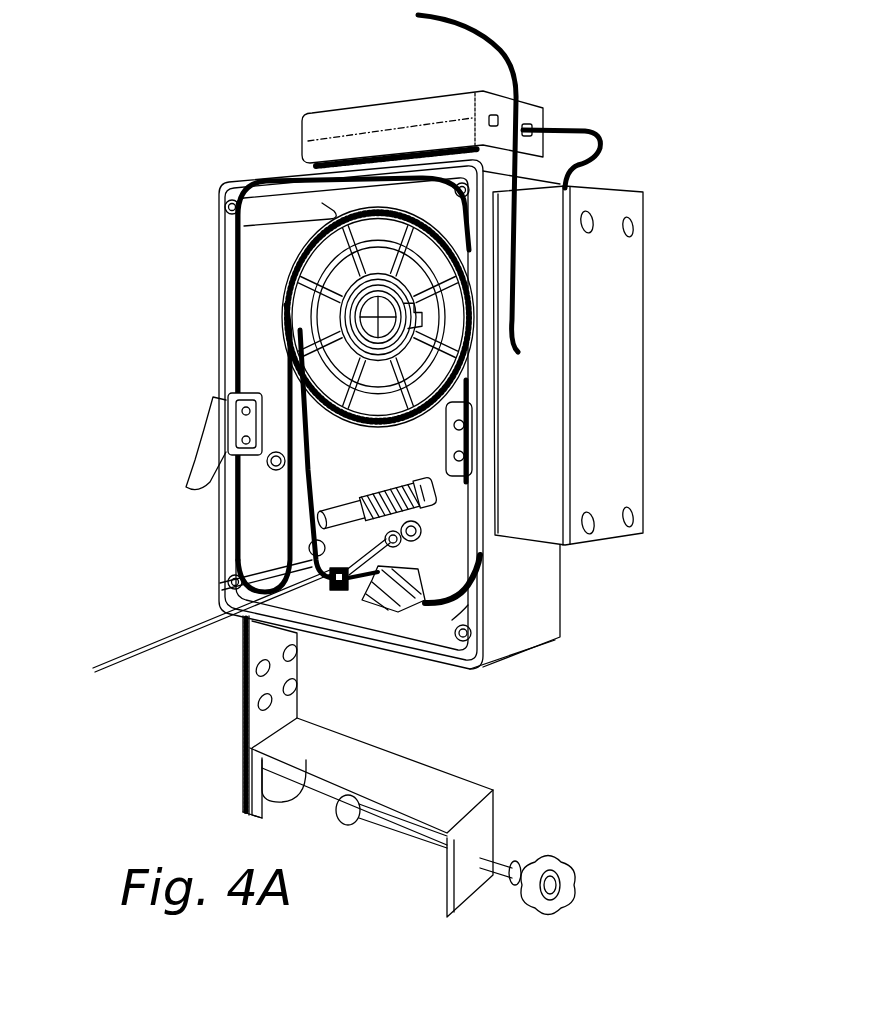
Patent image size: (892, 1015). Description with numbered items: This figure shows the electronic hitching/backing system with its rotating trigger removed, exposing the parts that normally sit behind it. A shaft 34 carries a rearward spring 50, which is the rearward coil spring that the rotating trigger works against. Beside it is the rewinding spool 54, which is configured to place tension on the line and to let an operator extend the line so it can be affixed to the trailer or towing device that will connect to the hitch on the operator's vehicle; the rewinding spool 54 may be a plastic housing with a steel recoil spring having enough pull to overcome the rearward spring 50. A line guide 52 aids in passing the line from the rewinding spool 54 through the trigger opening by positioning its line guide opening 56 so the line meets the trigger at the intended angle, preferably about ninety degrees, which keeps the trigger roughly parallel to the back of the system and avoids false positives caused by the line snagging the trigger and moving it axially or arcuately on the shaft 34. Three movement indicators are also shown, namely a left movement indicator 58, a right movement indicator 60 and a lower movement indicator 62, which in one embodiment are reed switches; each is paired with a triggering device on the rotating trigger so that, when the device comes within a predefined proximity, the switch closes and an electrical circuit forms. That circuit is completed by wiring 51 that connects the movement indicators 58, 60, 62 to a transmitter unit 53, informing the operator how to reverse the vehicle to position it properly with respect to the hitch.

The shaft 34 is at (290, 527).
The rearward spring 50 is at (370, 490).
The wiring 51 is at (237, 253).
The line guide 52 is at (320, 585).
The transmitter unit 53 is at (622, 317).
The rewinding spool 54 is at (350, 285).
The line guide opening 56 is at (218, 574).
The left movement indicator 58 is at (215, 400).
The right movement indicator 60 is at (428, 462).
The lower movement indicator 62 is at (385, 611).